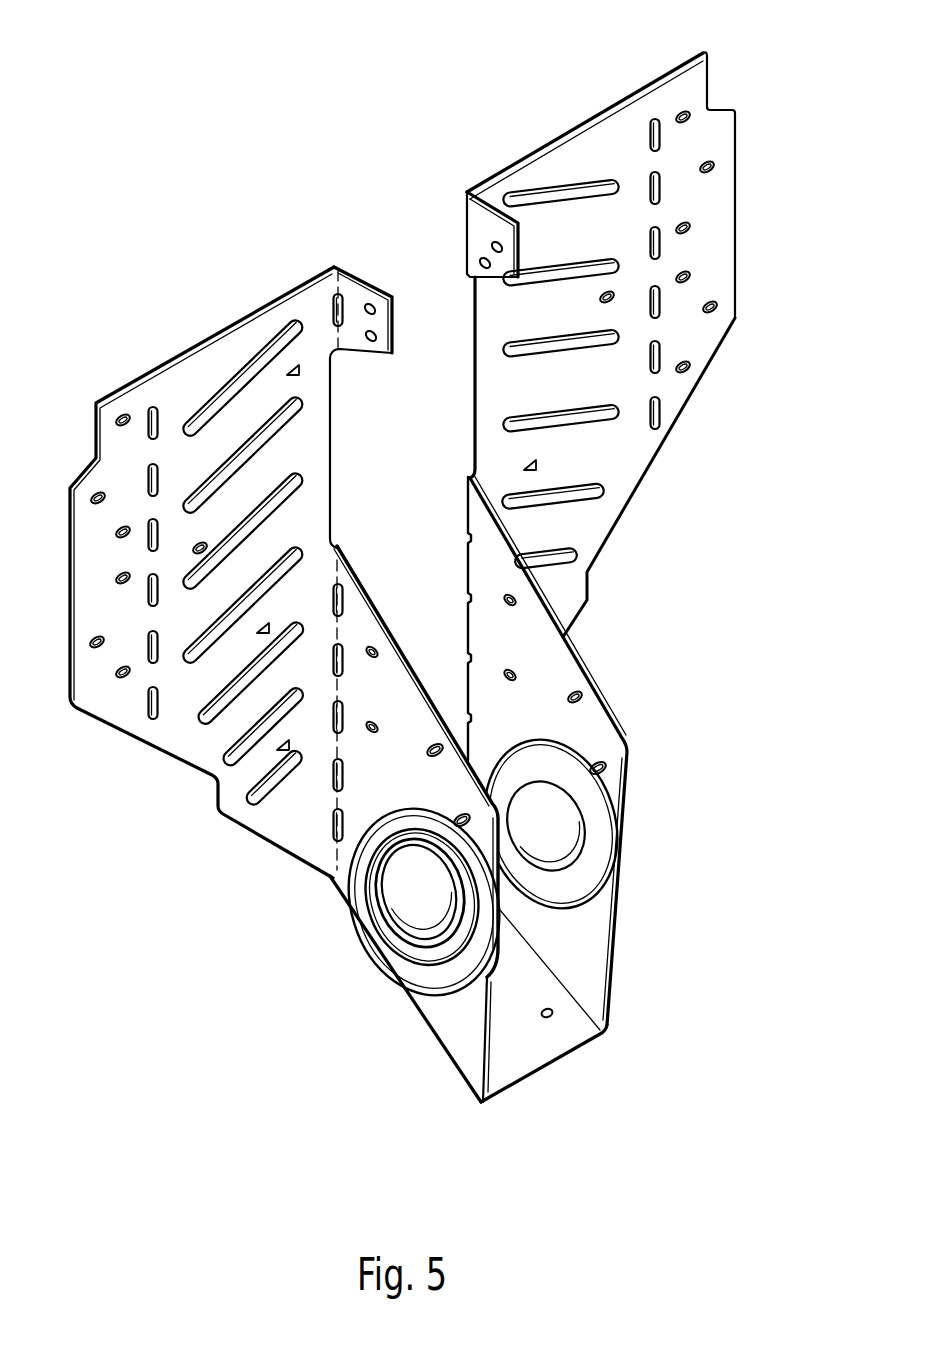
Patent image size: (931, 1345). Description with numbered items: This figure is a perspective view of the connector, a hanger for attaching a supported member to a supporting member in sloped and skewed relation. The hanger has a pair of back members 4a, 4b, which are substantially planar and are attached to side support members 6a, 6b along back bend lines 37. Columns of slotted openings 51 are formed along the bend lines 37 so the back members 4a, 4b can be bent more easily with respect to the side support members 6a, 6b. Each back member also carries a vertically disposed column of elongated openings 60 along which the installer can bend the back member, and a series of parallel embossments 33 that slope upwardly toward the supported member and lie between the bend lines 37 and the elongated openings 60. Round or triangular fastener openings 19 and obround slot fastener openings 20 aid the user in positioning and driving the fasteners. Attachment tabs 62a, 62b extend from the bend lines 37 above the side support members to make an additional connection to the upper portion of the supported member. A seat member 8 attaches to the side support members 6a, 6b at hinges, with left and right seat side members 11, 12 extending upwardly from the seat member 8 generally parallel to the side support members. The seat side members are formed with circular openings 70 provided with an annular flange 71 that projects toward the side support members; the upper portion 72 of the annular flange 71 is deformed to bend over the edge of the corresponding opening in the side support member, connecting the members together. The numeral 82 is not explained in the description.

The back member 4a is at (212, 336).
The back member 4b is at (535, 150).
The side support member 6a is at (398, 692).
The side support member 6b is at (562, 668).
The seat member 8 is at (560, 1058).
The left seat side member 11 is at (462, 1017).
The right seat side member 12 is at (590, 940).
The fastener openings 19 is at (377, 648).
The slot fastener openings 20 is at (126, 412).
The embossments 33 is at (268, 365).
The back bend lines 37 is at (343, 565).
The slotted openings 51 is at (342, 710).
The elongated openings 60 is at (162, 413).
The attachment tab 62a is at (362, 270).
The attachment tab 62b is at (522, 248).
The circular opening 70 is at (565, 850).
The annular flange 71 is at (385, 868).
The upper portion of the annular flange 72 is at (453, 908).
The flange ring 82 is at (440, 880).